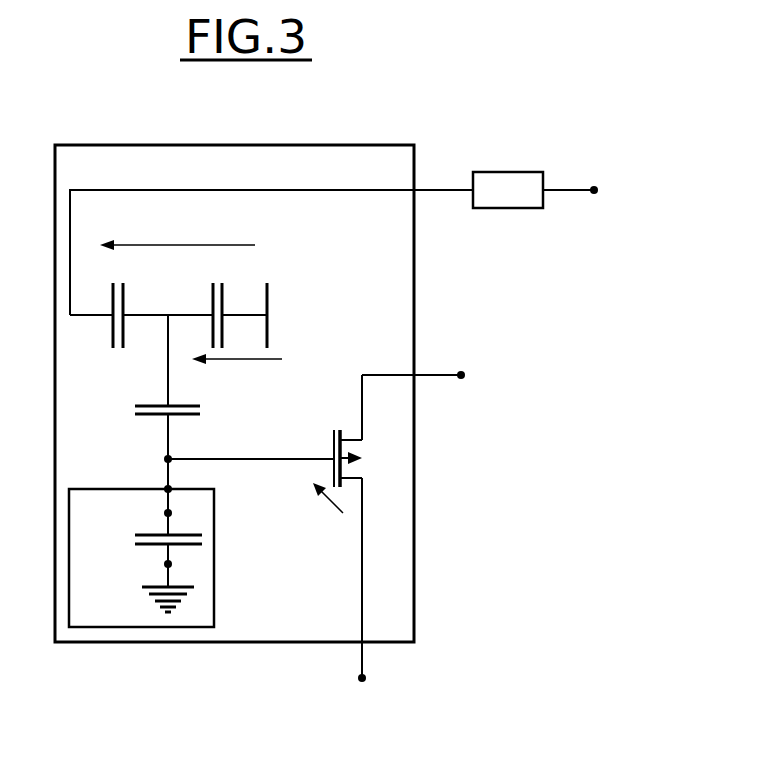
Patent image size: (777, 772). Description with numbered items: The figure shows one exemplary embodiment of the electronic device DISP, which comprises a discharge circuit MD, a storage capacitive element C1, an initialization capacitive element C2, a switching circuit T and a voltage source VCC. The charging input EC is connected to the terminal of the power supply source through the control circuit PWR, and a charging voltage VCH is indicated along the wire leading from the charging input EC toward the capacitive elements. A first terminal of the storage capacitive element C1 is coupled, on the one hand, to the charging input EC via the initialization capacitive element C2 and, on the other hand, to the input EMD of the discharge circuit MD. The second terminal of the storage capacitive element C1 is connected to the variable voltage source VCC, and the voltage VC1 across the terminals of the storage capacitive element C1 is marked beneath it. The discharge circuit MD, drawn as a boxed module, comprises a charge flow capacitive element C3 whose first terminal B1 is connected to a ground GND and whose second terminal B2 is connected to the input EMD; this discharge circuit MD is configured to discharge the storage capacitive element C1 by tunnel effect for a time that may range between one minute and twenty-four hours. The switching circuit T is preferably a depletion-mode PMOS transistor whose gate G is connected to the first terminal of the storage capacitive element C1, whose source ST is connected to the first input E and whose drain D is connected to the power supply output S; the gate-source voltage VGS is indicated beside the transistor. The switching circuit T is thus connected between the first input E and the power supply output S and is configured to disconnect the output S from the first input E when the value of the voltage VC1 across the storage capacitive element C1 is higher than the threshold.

The electronic device DISP is at (550, 311).
The charging input EC is at (418, 188).
The control circuit PWR is at (508, 190).
The charging voltage VCH is at (177, 231).
The initialization capacitive element C2 is at (119, 302).
The storage capacitive element C1 is at (217, 302).
The variable voltage source VCC is at (290, 315).
The voltage across the terminals of the storage capacitive element VC1 is at (237, 373).
The input of the discharge circuit EMD is at (168, 488).
The discharge circuit MD is at (214, 557).
The second terminal of the charge flow capacitive element B2 is at (183, 512).
The charge flow capacitive element C3 is at (152, 530).
The first terminal of the charge flow capacitive element B1 is at (183, 565).
The ground GND is at (138, 594).
The switching circuit T is at (334, 422).
The gate G is at (317, 446).
The drain D is at (373, 407).
The source ST is at (379, 578).
The power supply output S is at (421, 375).
The first input E is at (367, 678).
The gate-source voltage VGS is at (320, 505).